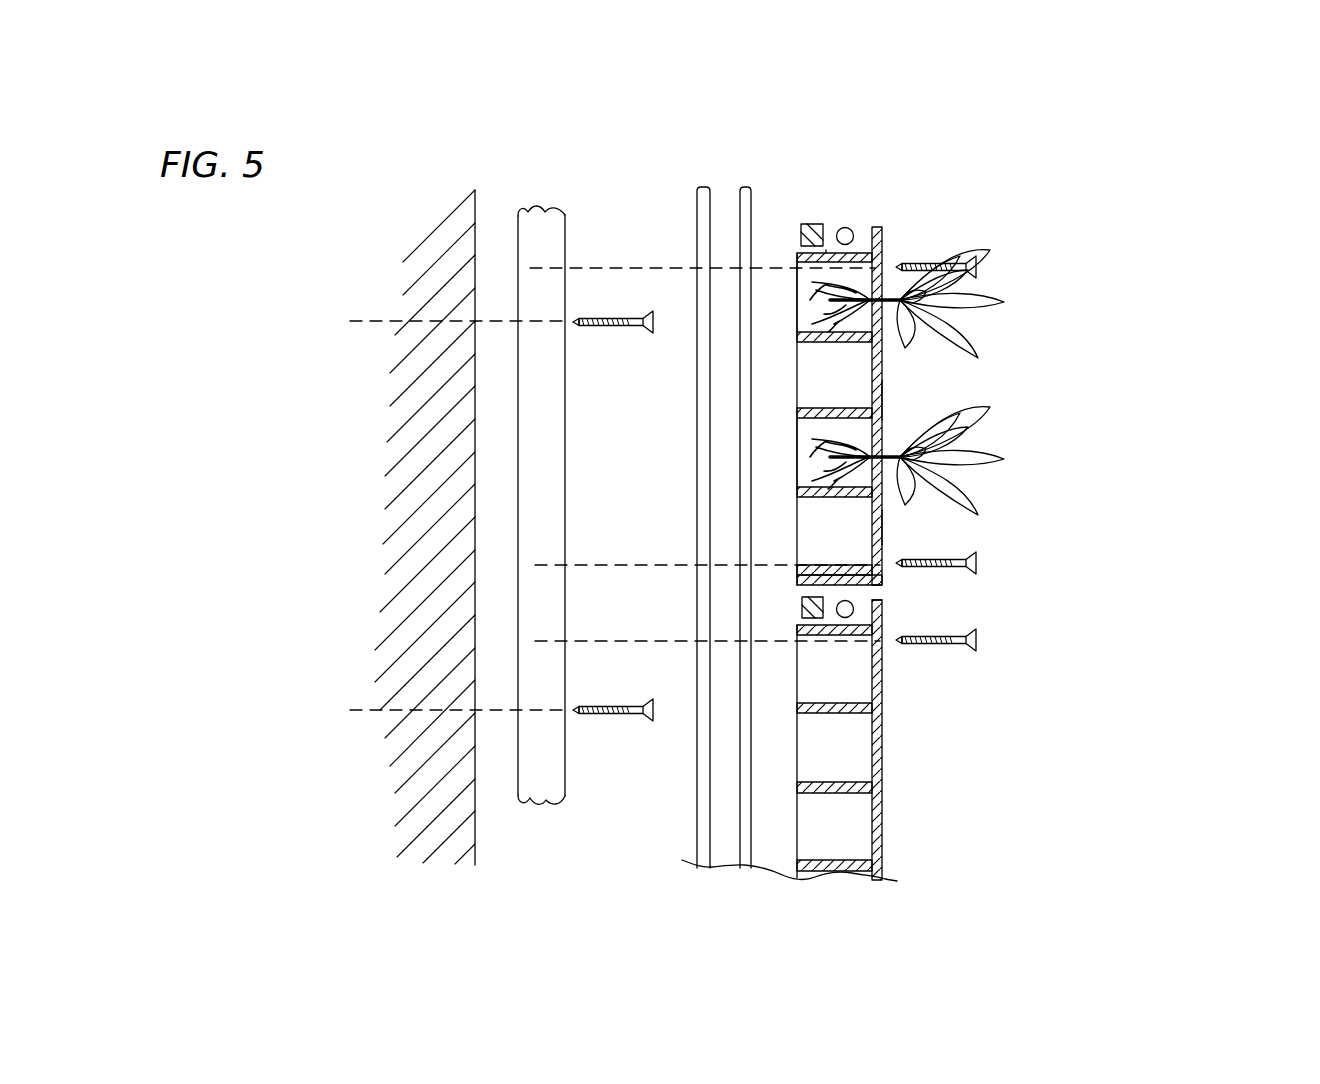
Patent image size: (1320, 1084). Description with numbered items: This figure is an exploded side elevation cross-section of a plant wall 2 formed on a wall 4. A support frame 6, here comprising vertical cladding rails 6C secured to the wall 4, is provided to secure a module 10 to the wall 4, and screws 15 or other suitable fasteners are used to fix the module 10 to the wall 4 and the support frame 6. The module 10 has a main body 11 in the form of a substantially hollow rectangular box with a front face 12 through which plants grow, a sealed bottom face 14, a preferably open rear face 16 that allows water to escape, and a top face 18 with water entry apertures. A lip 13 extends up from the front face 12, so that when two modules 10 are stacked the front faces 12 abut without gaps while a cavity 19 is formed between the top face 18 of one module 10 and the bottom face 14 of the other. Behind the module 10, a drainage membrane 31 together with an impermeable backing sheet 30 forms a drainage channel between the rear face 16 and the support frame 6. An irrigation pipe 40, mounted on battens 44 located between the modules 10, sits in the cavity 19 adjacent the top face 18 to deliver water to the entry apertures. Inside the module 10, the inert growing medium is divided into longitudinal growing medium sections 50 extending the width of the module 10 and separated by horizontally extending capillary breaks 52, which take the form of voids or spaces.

The plant wall 2 is at (1137, 154).
The wall 4 is at (407, 567).
The support frame 6 is at (544, 230).
The vertical cladding rails 6C is at (553, 502).
The module 10 is at (860, 493).
The main body 11 is at (883, 527).
The front face 12 is at (883, 400).
The lip 13 is at (881, 238).
The bottom face 14 is at (863, 585).
The screws 15 is at (610, 332).
The rear face 16 is at (796, 468).
The top face 18 is at (865, 624).
The cavity 19 is at (830, 232).
The impermeable backing sheet 30 is at (697, 453).
The drainage membrane 31 is at (740, 205).
The pipe 40 is at (847, 227).
The battens 44 is at (814, 223).
The growing medium sections 50 is at (805, 315).
The capillary breaks 52 is at (813, 345).